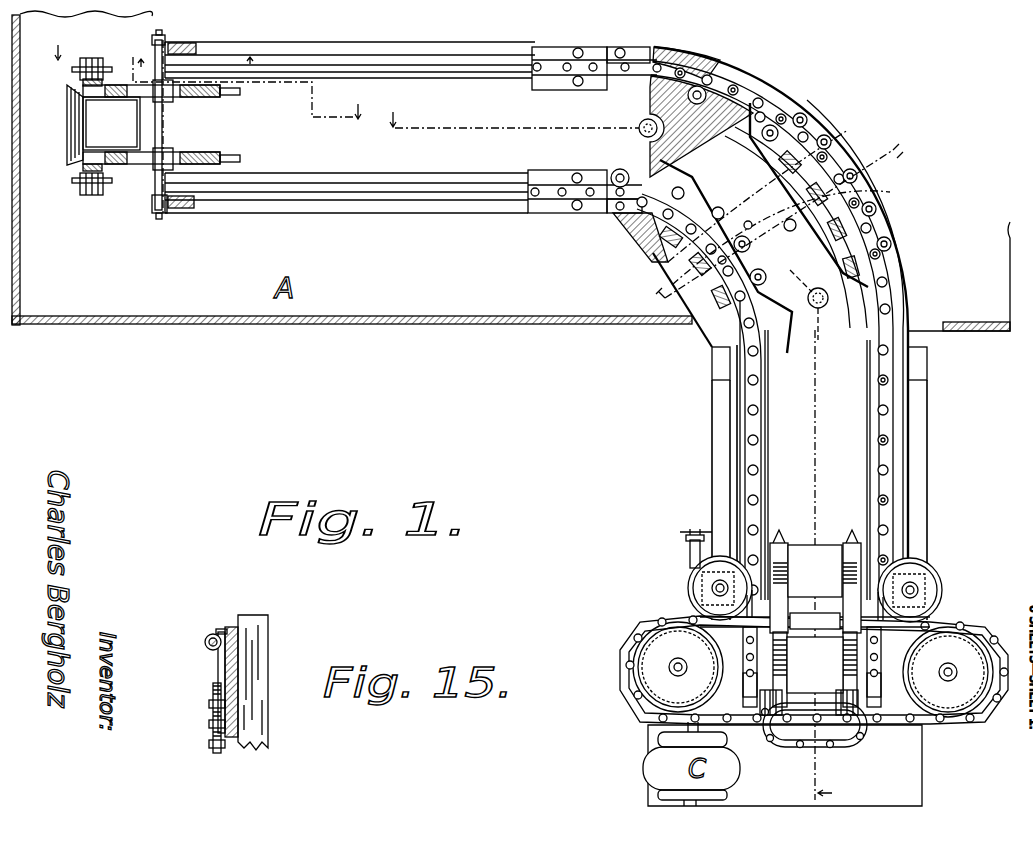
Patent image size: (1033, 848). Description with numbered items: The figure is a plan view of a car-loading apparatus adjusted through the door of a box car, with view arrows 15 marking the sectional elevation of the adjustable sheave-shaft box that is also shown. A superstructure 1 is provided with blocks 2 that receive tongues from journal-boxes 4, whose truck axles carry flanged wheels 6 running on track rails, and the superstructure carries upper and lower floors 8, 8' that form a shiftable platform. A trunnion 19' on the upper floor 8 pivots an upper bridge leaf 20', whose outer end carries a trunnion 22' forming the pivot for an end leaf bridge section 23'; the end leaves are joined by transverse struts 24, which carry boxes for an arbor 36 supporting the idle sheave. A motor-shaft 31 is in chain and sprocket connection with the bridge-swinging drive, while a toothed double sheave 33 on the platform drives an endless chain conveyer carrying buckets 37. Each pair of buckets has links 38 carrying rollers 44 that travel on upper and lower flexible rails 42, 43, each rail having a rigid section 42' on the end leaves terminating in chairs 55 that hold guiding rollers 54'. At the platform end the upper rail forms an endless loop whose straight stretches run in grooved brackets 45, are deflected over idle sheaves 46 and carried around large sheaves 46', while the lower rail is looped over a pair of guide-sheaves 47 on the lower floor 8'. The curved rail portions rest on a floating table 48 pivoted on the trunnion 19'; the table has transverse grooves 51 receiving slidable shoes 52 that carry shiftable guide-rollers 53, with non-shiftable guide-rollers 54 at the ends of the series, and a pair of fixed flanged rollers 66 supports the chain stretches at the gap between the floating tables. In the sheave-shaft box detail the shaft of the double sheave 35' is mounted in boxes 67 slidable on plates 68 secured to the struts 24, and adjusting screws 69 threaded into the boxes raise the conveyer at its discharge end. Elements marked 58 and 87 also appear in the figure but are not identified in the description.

In FIG. 1, the superstructure 1 is at (712, 372).
In FIG. 1, the blocks 2 is at (610, 456).
In FIG. 1, the journal-boxes 4 is at (771, 215).
In FIG. 1, the flanged wheels 6 is at (208, 90).
In FIG. 1, the upper floor 8 is at (829, 565).
In FIG. 1, the lower floor 8' is at (785, 765).
In FIG. 1, the view direction 15 is at (202, 56).
In FIG. 1, the trunnion 19' is at (825, 305).
In FIG. 1, the upper bridge leaf 20' is at (702, 63).
In FIG. 1, the trunnion 22' is at (634, 122).
In FIG. 1, the end leaf bridge section 23' is at (244, 127).
In FIG. 1, the transverse struts 24 is at (200, 48).
In FIG. 15, the transverse struts 24 is at (268, 715).
In FIG. 1, the motor-shaft 31 is at (690, 548).
In FIG. 1, the toothed double sheave 33 is at (843, 574).
In FIG. 1, the double sheave 35' is at (161, 124).
In FIG. 1, the arbor 36 is at (165, 33).
In FIG. 15, the arbor 36 is at (205, 645).
In FIG. 1, the buckets 37 is at (88, 125).
In FIG. 1, the links 38 is at (80, 90).
In FIG. 1, the upper flexible rail 42 is at (772, 330).
In FIG. 1, the rigid track section 42' is at (350, 126).
In FIG. 1, the lower flexible rail 43 is at (823, 749).
In FIG. 1, the rollers 44 is at (93, 58).
In FIG. 1, the brackets 45 is at (870, 410).
In FIG. 1, the idle sheaves 46 is at (813, 589).
In FIG. 1, the large sheaves 46' is at (814, 660).
In FIG. 1, the guide-sheaves 47 is at (775, 730).
In FIG. 1, the upper floating table 48 is at (779, 207).
In FIG. 1, the transverse grooves 51 is at (665, 270).
In FIG. 1, the shoes 52 is at (835, 140).
In FIG. 1, the shiftable guide-rollers 53 is at (815, 127).
In FIG. 1, the non-shiftable guide-rollers 54 is at (846, 222).
In FIG. 1, the guide rollers 54' is at (596, 129).
In FIG. 1, the chairs 55 is at (548, 92).
In FIG. 1, the roller 58 is at (750, 253).
In FIG. 1, the fixed flanged rollers 66 is at (695, 85).
In FIG. 15, the boxes 67 is at (222, 628).
In FIG. 15, the plates 68 is at (232, 670).
In FIG. 15, the adjusting screws 69 is at (210, 712).
In FIG. 1, the gear plate 87 is at (812, 626).